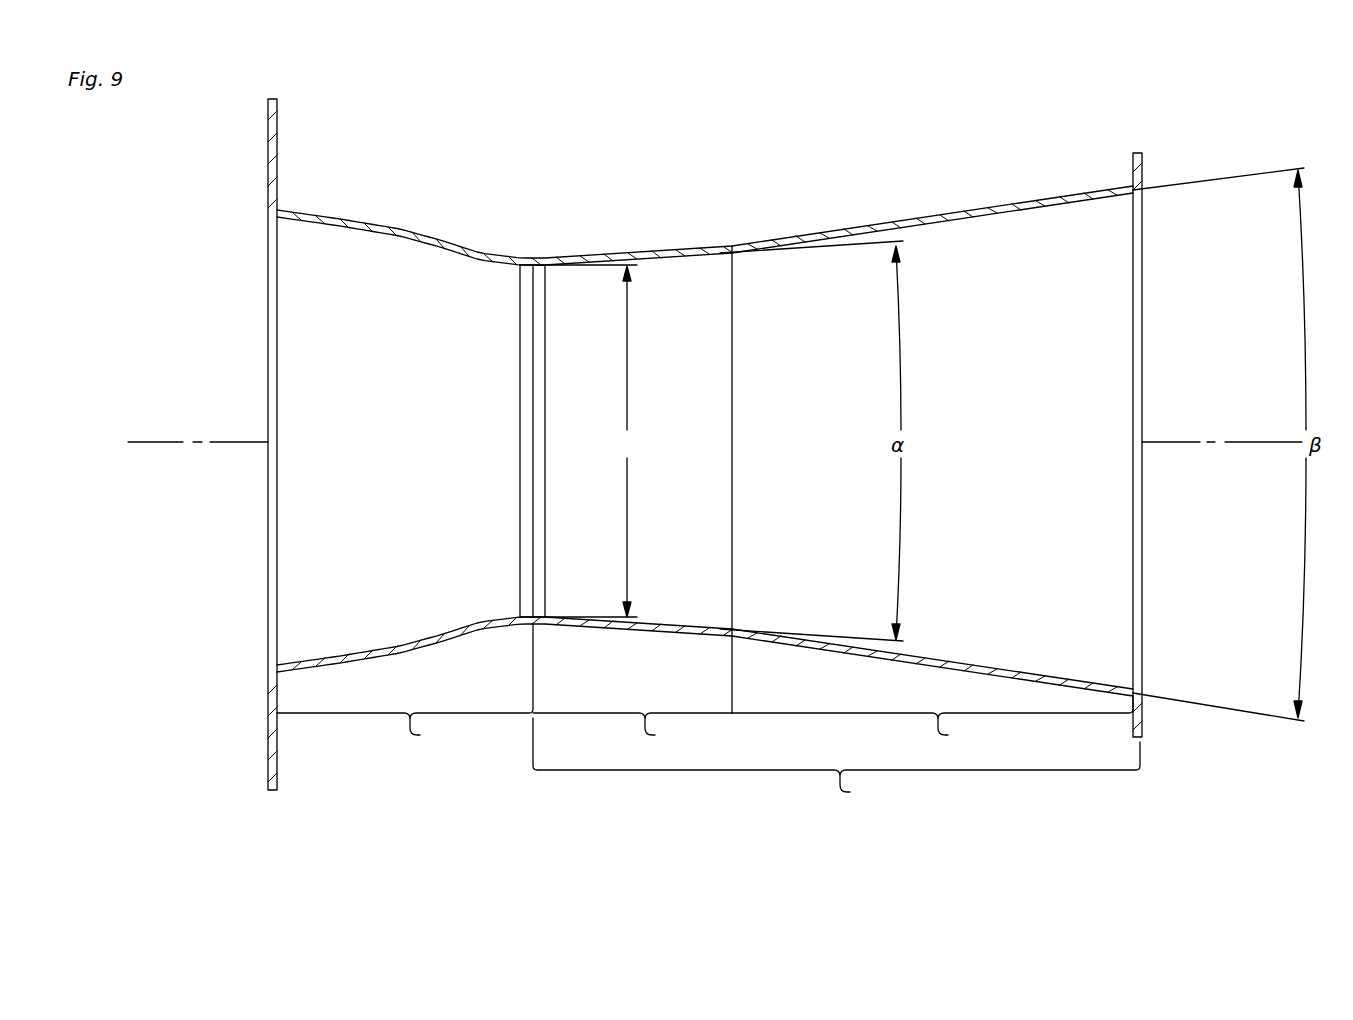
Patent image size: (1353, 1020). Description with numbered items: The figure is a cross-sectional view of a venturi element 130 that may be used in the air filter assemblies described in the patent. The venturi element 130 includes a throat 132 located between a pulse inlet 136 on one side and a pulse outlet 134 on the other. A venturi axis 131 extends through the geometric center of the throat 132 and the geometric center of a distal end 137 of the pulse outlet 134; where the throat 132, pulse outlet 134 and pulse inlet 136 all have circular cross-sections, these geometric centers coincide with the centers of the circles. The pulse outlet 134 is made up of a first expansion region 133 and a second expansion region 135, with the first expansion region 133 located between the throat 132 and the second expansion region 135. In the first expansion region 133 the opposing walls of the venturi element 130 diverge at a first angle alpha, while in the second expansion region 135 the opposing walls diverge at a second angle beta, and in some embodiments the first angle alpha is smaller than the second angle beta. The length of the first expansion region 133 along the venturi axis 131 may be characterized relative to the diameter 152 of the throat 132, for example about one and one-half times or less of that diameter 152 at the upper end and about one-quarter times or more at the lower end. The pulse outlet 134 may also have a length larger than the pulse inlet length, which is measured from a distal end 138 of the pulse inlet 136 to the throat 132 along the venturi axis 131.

The venturi element 130 is at (932, 150).
The venturi axis 131 is at (228, 442).
The throat 132 is at (525, 258).
The first expansion region 133 is at (632, 734).
The pulse outlet 134 is at (836, 764).
The second expansion region 135 is at (932, 725).
The pulse inlet 136 is at (405, 689).
The distal end of the pulse outlet 137 is at (1142, 232).
The distal end of the pulse inlet 138 is at (268, 252).
The diameter of the throat 152 is at (583, 441).